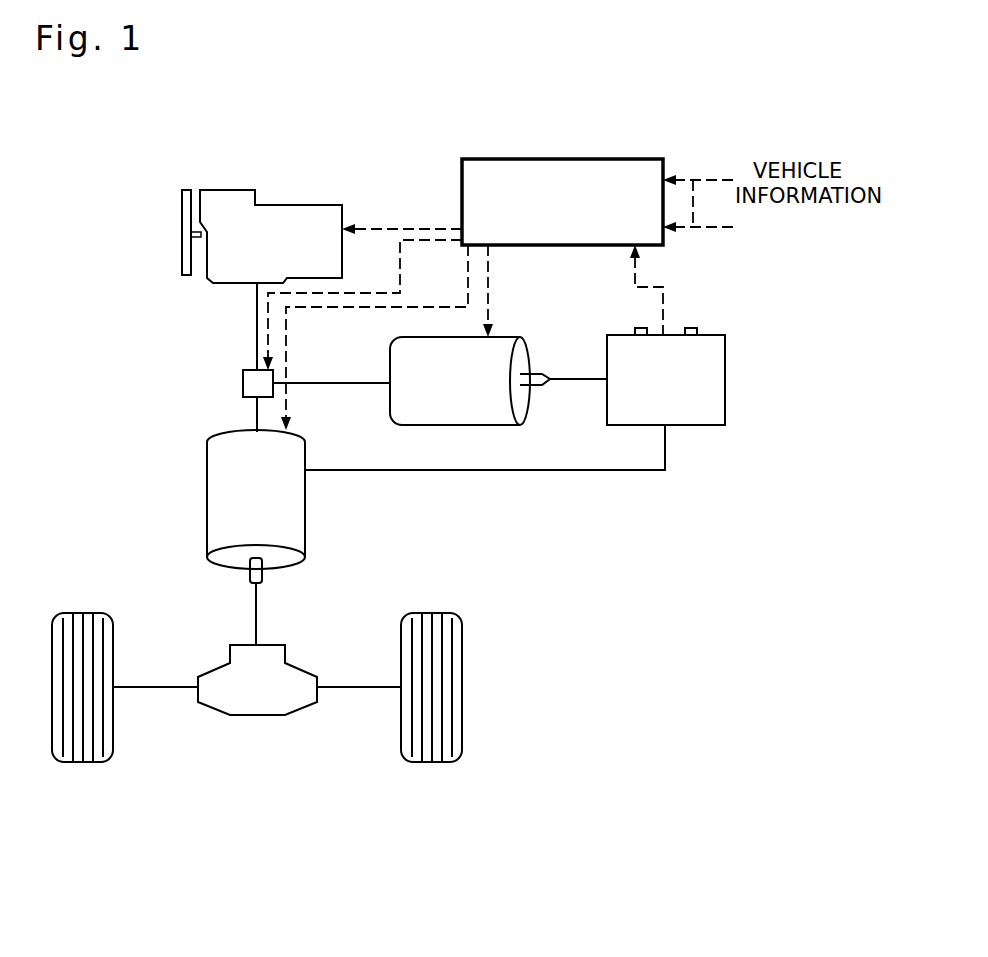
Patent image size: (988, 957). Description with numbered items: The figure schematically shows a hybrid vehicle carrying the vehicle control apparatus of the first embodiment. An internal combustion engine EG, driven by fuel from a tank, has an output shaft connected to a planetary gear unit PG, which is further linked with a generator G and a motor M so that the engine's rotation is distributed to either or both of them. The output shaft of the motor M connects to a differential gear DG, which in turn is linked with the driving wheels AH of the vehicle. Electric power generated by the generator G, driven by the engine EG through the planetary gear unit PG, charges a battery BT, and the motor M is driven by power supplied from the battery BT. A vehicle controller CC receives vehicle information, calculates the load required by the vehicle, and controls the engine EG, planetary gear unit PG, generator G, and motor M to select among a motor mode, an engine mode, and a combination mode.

The internal combustion engine EG is at (292, 205).
The vehicle controller CC is at (565, 159).
The planetary gear unit PG is at (247, 370).
The generator G is at (513, 337).
The battery BT is at (725, 353).
The motor M is at (207, 480).
The differential gear DG is at (272, 645).
The driving wheels AH is at (88, 762).